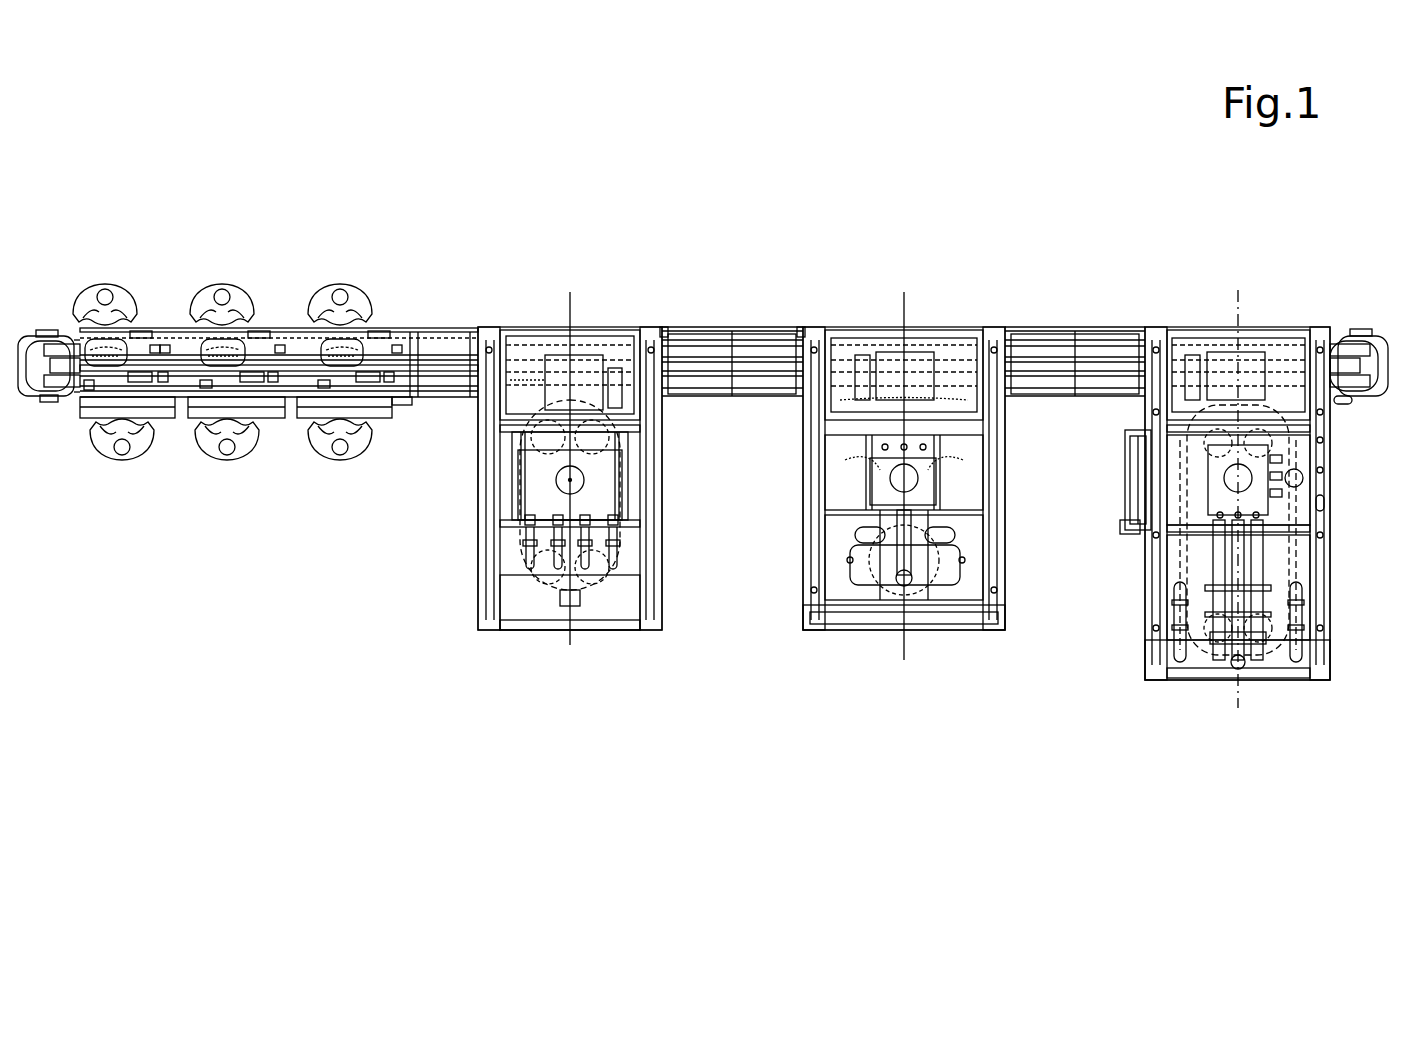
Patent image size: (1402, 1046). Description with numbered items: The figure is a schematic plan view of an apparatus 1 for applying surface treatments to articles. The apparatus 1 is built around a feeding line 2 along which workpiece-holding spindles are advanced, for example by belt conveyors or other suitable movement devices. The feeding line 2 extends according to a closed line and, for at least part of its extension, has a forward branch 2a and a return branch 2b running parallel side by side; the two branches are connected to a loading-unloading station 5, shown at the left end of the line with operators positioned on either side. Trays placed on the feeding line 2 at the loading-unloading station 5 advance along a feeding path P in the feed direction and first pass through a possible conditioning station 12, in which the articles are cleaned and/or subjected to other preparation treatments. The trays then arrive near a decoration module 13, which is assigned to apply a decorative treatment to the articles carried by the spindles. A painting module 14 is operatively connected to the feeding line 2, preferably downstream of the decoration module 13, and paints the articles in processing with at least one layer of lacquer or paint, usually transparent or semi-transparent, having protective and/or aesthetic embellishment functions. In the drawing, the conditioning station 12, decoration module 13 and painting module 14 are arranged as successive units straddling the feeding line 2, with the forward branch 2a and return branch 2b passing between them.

The apparatus 1 is at (300, 726).
The feeding line 2 is at (734, 306).
The forward branch 2a is at (1095, 382).
The return branch 2b is at (1100, 352).
The loading-unloading station 5 is at (283, 300).
The feeding path P is at (446, 392).
The conditioning station 12 is at (611, 650).
The decoration module 13 is at (948, 664).
The painting module 14 is at (1274, 710).